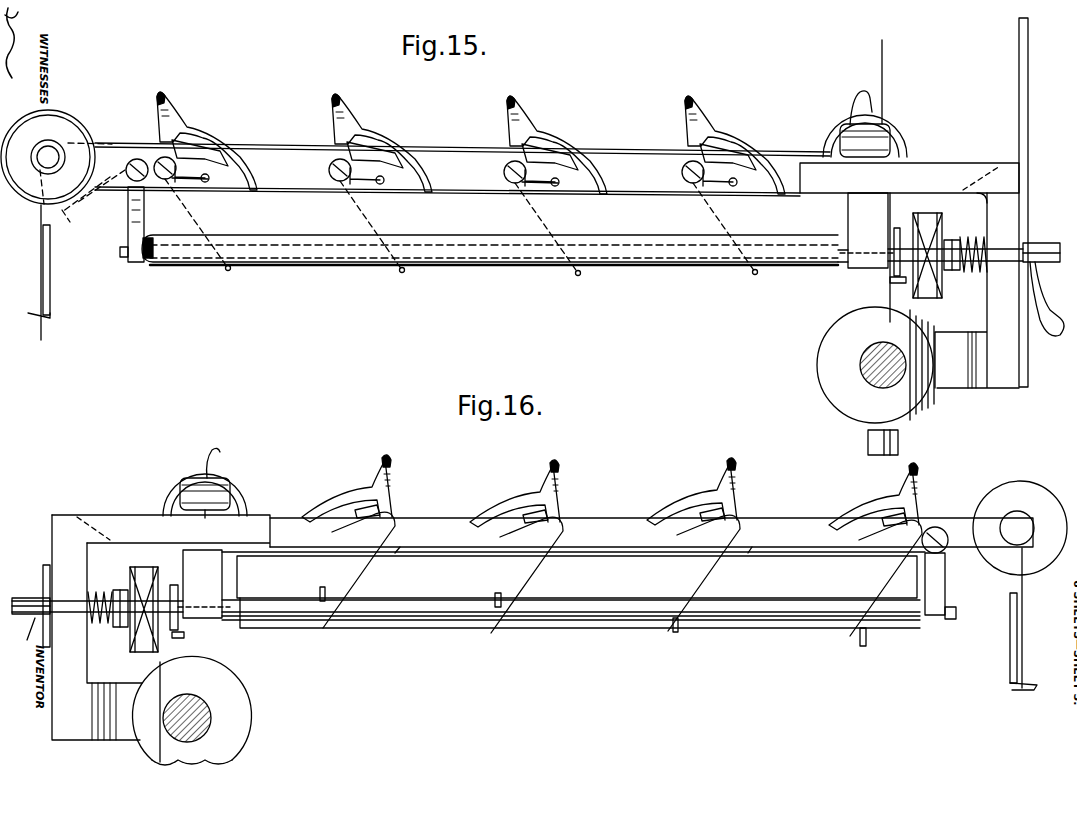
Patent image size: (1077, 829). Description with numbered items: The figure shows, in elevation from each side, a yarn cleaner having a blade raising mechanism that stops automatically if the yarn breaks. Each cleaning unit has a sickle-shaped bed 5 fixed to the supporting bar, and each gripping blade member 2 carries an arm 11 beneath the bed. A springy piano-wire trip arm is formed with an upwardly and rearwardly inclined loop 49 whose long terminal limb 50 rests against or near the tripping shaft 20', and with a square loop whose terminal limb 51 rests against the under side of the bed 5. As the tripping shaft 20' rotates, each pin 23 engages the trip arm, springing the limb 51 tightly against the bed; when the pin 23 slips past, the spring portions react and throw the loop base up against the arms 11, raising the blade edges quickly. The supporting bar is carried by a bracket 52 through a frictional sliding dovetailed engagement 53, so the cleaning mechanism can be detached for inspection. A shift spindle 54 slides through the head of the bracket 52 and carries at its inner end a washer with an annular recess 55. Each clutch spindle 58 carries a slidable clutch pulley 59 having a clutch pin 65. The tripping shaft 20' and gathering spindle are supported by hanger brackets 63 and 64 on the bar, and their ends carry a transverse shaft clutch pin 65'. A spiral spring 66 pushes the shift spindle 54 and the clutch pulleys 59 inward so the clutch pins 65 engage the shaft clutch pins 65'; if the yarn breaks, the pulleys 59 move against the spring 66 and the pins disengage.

In FIG. 15, the clamp body 2 is at (352, 128).
In FIG. 16, the clamp body 2 is at (388, 482).
In FIG. 15, the bracket or bed 5 is at (203, 153).
In FIG. 16, the bracket or bed 5 is at (690, 518).
In FIG. 15, the arm 11 is at (352, 197).
In FIG. 15, the terminal limb 51 is at (188, 180).
In FIG. 16, the tripping shaft 20' is at (571, 603).
In FIG. 16, the pin 23 is at (320, 588).
In FIG. 16, the loop 49 is at (560, 532).
In FIG. 16, the terminal limb 50 is at (492, 632).
In FIG. 15, the bracket 52 is at (959, 203).
In FIG. 16, the bracket 52 is at (92, 627).
In FIG. 15, the dovetailed engagement 53 is at (947, 170).
In FIG. 16, the dovetailed engagement 53 is at (120, 528).
In FIG. 15, the shift spindle 54 is at (1047, 250).
In FIG. 16, the shift spindle 54 is at (20, 598).
In FIG. 15, the annular recess 55 is at (955, 272).
In FIG. 16, the annular recess 55 is at (117, 630).
In FIG. 15, the clutch spindle 58 is at (975, 256).
In FIG. 16, the clutch spindle 58 is at (90, 607).
In FIG. 15, the clutch pulley 59 is at (922, 220).
In FIG. 16, the clutch pulley 59 is at (143, 570).
In FIG. 15, the hanger bracket 63 is at (866, 230).
In FIG. 16, the hanger bracket 63 is at (204, 584).
In FIG. 15, the hanger bracket 64 is at (128, 222).
In FIG. 16, the hanger bracket 64 is at (946, 583).
In FIG. 15, the clutch pin 65 is at (883, 286).
In FIG. 16, the clutch pin 65 is at (194, 641).
In FIG. 15, the shaft clutch pin 65' is at (901, 237).
In FIG. 16, the shaft clutch pin 65' is at (171, 590).
In FIG. 15, the spiral spring 66 is at (968, 240).
In FIG. 16, the spiral spring 66 is at (108, 592).